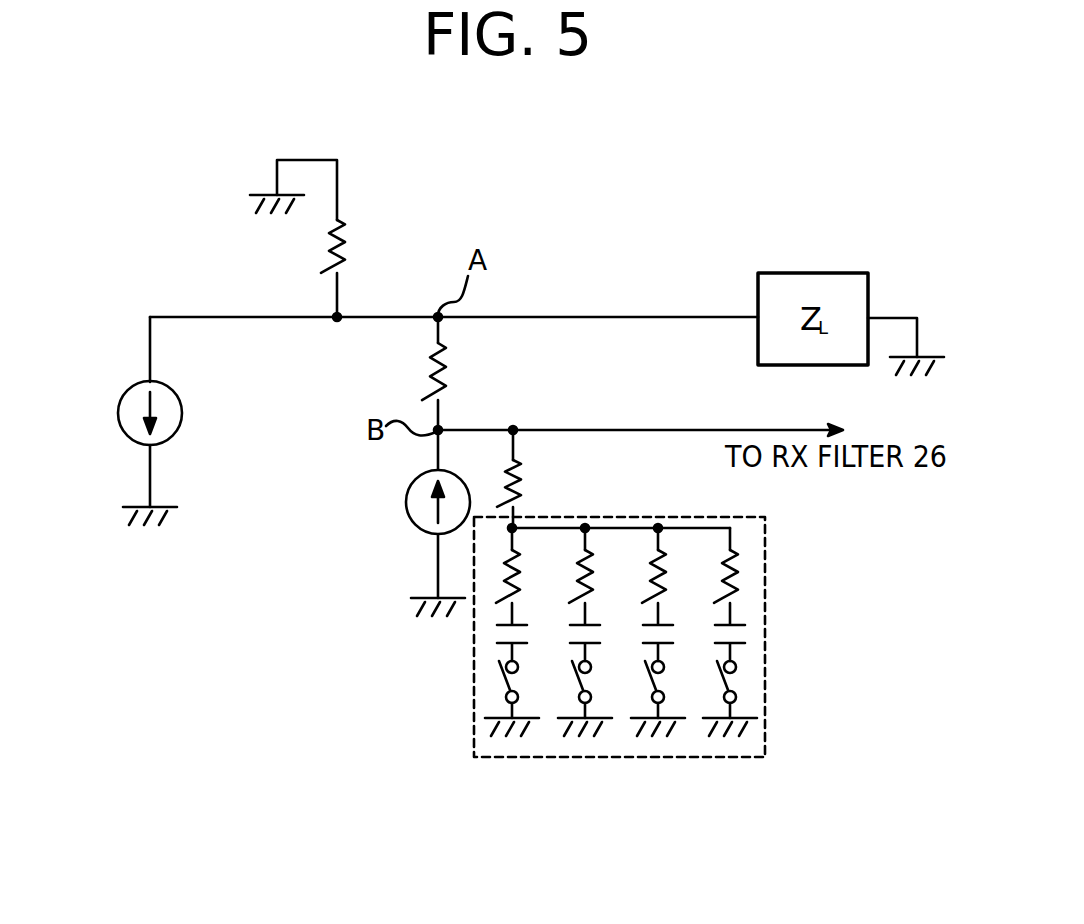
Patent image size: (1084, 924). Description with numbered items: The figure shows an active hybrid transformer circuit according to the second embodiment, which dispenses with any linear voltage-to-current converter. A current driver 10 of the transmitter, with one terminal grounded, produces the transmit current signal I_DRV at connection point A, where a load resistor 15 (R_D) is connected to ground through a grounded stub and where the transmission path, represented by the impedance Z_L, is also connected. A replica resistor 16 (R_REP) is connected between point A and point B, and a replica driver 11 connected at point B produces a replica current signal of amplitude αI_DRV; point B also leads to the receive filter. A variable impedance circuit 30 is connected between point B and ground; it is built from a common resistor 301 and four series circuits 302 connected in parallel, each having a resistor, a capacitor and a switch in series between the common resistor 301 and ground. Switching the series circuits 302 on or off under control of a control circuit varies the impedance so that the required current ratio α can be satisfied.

The current driver 10 is at (184, 405).
The replica driver 11 is at (418, 528).
The load resistor 15 is at (327, 257).
The replica resistor 16 is at (428, 378).
The variable impedance circuit 30 is at (672, 614).
The common resistor 301 is at (528, 484).
The series circuits 302 is at (870, 593).